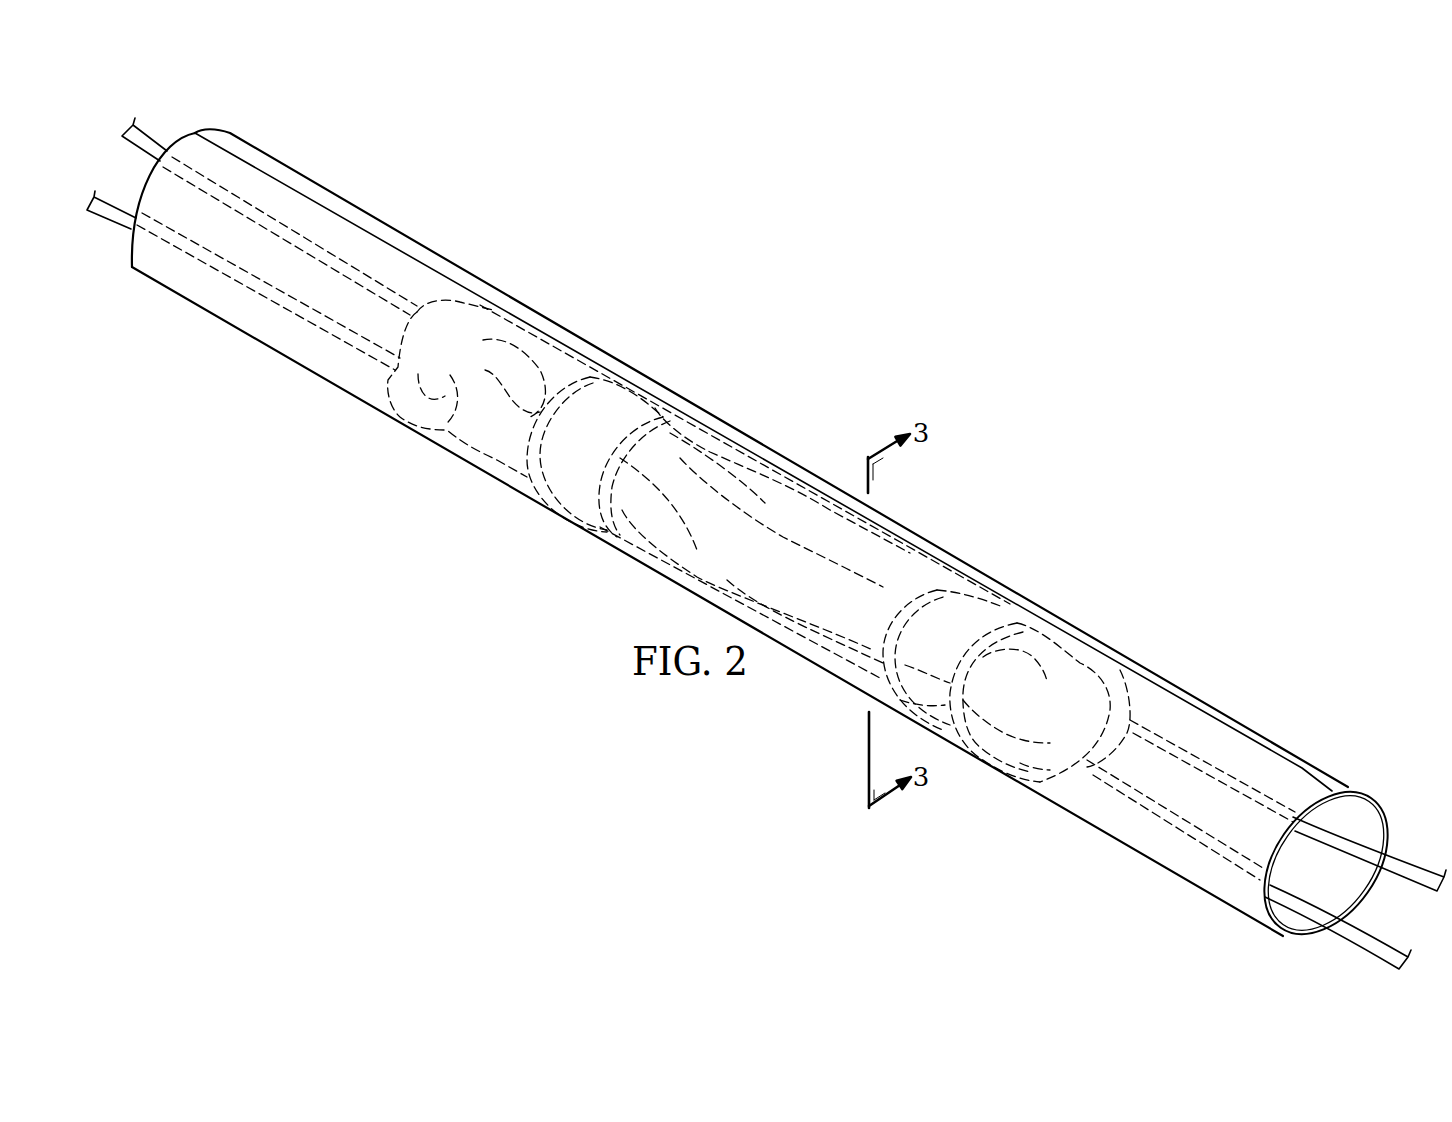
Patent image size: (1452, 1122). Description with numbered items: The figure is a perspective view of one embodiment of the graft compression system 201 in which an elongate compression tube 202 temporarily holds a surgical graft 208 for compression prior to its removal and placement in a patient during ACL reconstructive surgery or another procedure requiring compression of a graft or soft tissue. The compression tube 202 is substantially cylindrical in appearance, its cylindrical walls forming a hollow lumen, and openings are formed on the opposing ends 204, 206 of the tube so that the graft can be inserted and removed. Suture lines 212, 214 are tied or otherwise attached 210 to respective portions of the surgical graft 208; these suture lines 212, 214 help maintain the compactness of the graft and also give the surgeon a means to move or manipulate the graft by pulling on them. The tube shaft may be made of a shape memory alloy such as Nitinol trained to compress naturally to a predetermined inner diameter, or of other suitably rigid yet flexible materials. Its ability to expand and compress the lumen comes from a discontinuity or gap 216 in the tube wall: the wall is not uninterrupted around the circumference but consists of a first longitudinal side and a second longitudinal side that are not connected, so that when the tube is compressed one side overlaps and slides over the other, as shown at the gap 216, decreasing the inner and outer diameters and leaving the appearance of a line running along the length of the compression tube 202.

The fiber optic cable assembly 201 is at (832, 284).
The compression tube 202 is at (448, 453).
The end of the compression tube 204 is at (1300, 940).
The end of the compression tube 206 is at (122, 248).
The surgical graft 208 is at (722, 462).
The attachment of suture lines to the graft 210 is at (1013, 625).
The suture line 212 is at (152, 141).
The suture line 214 is at (1403, 866).
The discontinuity or gap in the tube wall 216 is at (1305, 768).